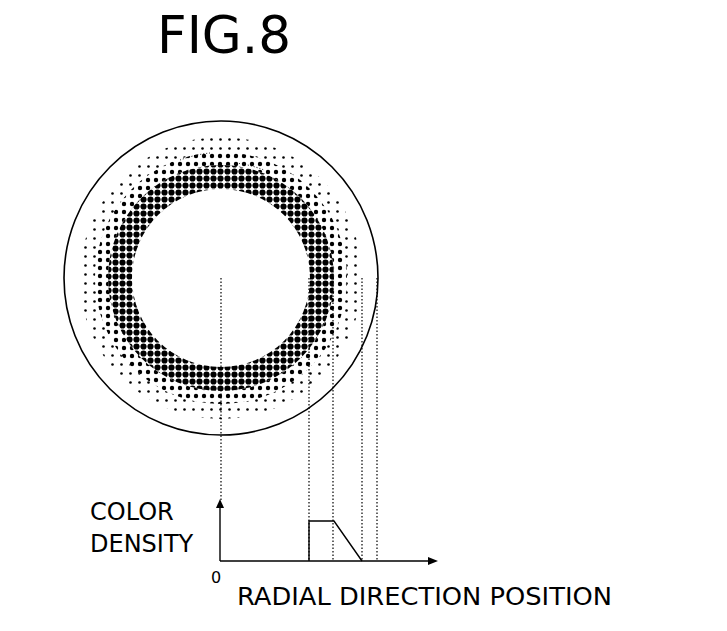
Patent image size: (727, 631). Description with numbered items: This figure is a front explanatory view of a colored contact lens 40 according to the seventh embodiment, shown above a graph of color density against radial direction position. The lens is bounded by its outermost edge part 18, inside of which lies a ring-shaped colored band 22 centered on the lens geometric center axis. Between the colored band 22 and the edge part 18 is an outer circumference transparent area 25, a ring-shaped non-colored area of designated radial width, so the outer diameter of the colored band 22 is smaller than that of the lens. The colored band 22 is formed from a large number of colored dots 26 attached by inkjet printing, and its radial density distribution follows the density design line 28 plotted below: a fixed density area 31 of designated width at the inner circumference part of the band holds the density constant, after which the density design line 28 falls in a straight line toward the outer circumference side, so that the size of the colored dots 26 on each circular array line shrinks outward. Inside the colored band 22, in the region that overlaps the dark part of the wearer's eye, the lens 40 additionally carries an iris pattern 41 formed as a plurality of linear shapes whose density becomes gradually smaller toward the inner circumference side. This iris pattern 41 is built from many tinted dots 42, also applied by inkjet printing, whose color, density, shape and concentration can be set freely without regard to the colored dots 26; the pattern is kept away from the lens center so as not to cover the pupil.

The edge part 18 is at (62, 265).
The colored band 22 is at (169, 143).
The outer circumference transparent area 25 is at (374, 298).
The colored dots 26 is at (132, 193).
The density design line 28 is at (357, 520).
The fixed density area 31 is at (250, 165).
The colored contact lens 40 is at (224, 275).
The iris pattern 41 is at (195, 153).
The tinted dots 42 is at (148, 170).